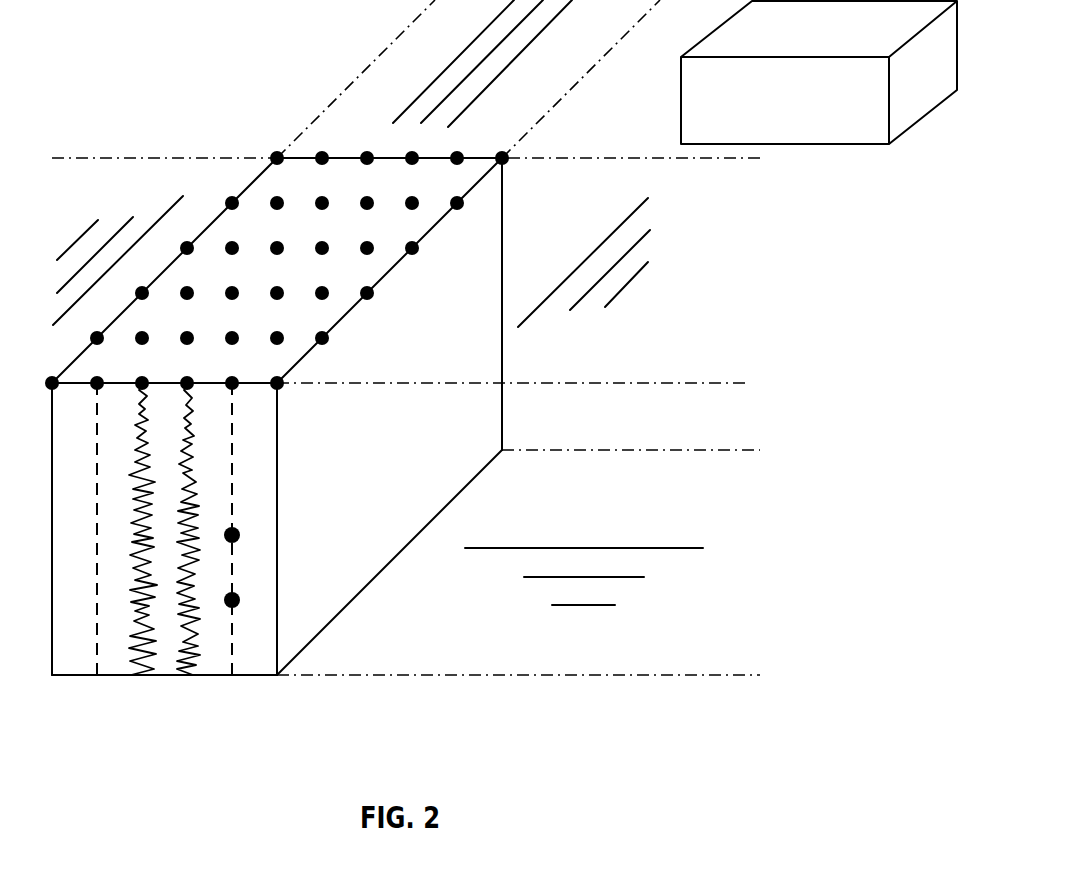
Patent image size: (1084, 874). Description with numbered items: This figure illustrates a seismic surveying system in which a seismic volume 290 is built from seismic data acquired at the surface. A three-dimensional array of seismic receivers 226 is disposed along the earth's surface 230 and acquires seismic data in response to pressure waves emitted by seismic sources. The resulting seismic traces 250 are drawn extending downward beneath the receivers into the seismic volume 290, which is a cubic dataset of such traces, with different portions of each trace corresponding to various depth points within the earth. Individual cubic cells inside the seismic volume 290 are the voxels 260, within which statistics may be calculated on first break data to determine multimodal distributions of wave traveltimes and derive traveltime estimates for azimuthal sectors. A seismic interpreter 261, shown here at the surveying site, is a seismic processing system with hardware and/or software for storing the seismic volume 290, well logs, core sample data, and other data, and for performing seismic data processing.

The seismic receivers 226 is at (315, 145).
The earth's surface 230 is at (677, 356).
The seismic traces 250 is at (132, 682).
The voxels 260 is at (245, 531).
The seismic interpreter 261 is at (847, 74).
The seismic volume 290 is at (350, 504).